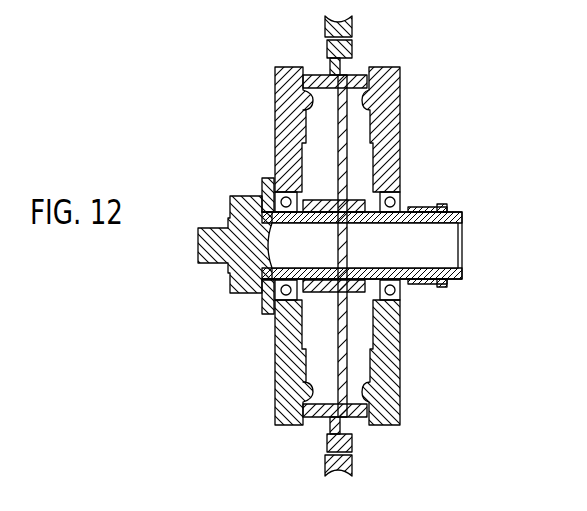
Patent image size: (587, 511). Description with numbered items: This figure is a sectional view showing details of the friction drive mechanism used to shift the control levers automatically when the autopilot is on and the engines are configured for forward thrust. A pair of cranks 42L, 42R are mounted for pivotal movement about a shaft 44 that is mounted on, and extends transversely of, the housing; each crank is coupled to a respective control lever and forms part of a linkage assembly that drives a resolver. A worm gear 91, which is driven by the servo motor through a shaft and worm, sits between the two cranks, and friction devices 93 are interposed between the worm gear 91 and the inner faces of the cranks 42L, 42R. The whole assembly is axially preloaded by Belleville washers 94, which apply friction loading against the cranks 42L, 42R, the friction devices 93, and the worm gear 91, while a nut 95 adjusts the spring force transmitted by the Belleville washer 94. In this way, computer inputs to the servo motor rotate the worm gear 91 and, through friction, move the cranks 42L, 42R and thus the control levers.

The crank 42L is at (282, 143).
The crank 42R is at (398, 146).
The shaft 44 is at (456, 207).
The worm gear 91 is at (353, 27).
The friction devices 93 is at (321, 72).
The Belleville washers 94 is at (262, 183).
The nut 95 is at (237, 294).